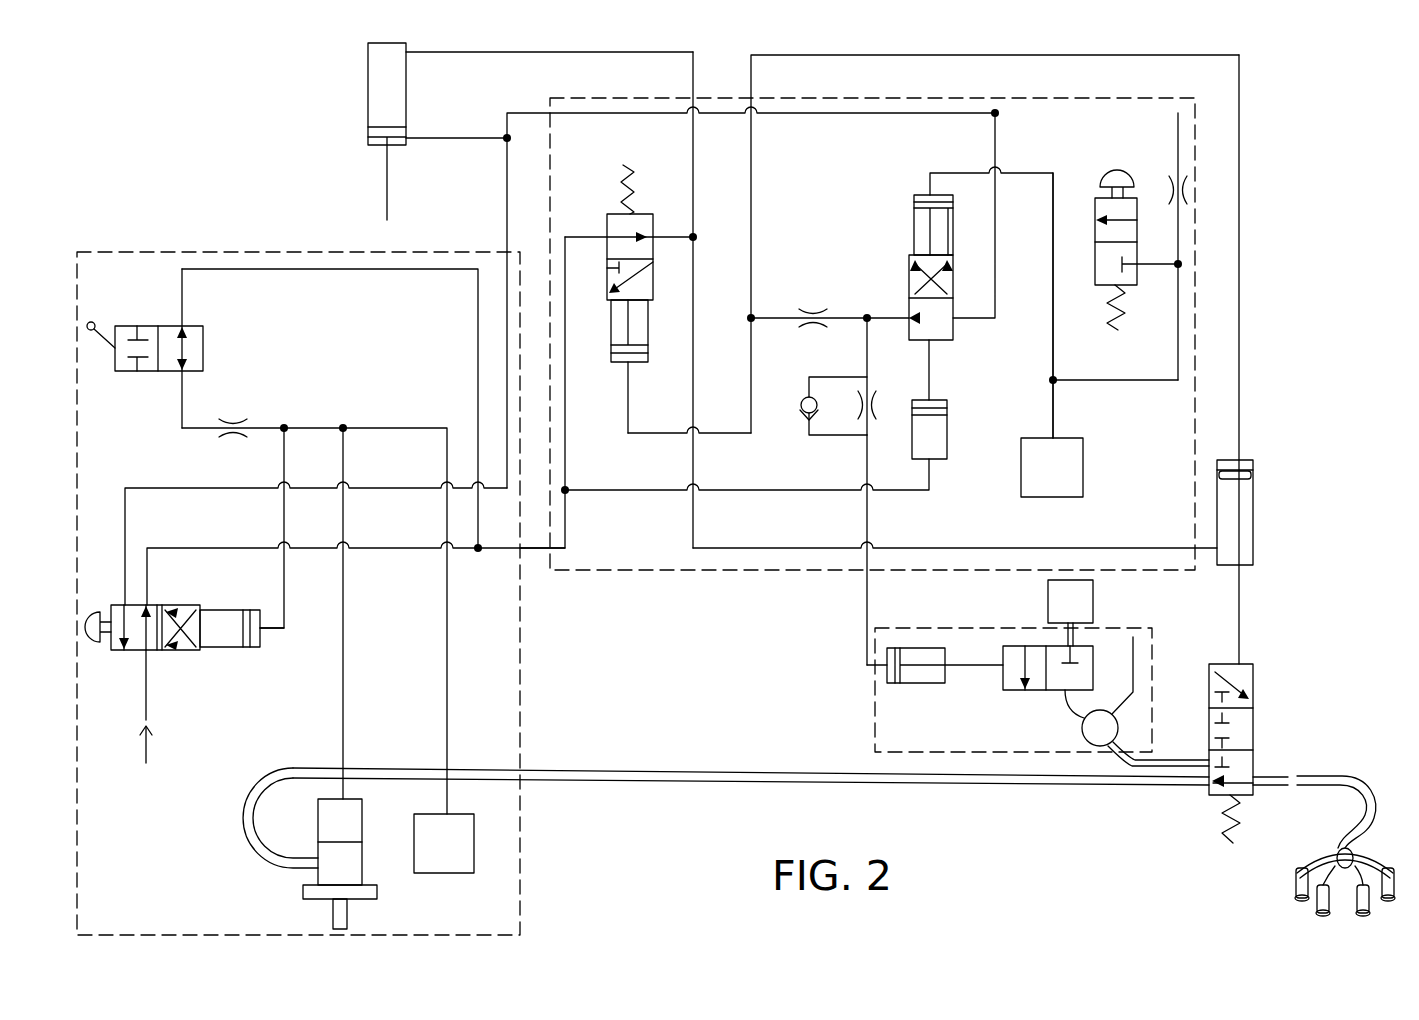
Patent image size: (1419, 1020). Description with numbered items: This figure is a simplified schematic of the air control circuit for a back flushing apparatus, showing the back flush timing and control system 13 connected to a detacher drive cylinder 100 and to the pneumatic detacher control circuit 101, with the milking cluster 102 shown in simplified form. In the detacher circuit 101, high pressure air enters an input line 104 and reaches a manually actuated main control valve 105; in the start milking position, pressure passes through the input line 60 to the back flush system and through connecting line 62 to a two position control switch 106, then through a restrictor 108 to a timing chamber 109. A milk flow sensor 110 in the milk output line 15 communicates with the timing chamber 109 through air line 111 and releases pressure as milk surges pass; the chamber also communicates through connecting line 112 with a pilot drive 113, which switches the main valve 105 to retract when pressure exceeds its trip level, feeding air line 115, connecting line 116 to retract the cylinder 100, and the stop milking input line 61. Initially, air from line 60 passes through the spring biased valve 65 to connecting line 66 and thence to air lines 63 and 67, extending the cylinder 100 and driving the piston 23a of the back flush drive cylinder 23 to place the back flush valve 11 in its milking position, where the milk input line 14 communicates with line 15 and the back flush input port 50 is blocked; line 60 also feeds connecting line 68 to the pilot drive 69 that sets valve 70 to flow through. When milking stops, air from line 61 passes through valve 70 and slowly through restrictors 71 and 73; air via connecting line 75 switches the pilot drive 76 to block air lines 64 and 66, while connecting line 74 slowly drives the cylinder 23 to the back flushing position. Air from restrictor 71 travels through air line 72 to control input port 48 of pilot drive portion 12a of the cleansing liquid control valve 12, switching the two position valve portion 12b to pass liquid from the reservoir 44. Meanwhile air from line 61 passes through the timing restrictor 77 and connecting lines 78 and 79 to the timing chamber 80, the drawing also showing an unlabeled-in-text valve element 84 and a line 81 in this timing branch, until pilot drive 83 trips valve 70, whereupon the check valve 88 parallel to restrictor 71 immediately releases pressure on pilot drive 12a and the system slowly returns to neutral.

The detacher drive cylinder 100 is at (368, 94).
The air line 63 is at (558, 52).
The connecting line 116 is at (466, 138).
The stop milking input line 61 is at (532, 110).
The pneumatic control circuit 101 is at (215, 248).
The two position control switch 106 is at (153, 325).
The connecting line 62 is at (477, 407).
The restrictor 108 is at (240, 425).
The air line 115 is at (183, 485).
The connecting line 112 is at (282, 472).
The air line 111 is at (347, 522).
The input line 60 is at (457, 552).
The main control valve 105 is at (117, 603).
The input line 104 is at (147, 692).
The pilot drive 113 is at (237, 608).
The milk flow sensor 110 is at (362, 808).
The timing chamber 109 is at (447, 873).
The milk output line 15 is at (923, 783).
The back flush timing and control system 13 is at (1199, 254).
The valve 65 is at (607, 221).
The connecting line 66 is at (690, 235).
The pilot drive 76 is at (610, 332).
The air line 64 is at (563, 473).
The connecting line 68 is at (642, 435).
The connecting line 75 is at (752, 397).
The air line 67 is at (694, 395).
The air line 72 is at (868, 541).
The connecting line 74 is at (753, 236).
The restrictor 73 is at (815, 316).
The valve 70 is at (908, 293).
The pilot drive 83 is at (913, 233).
The pilot drive 69 is at (948, 441).
The restrictor 71 is at (867, 409).
The check valve 88 is at (803, 413).
The valve 84 is at (1096, 202).
The timing restrictor 77 is at (1177, 194).
The line 81 is at (1050, 367).
The connecting line 78 is at (1118, 380).
The connecting line 79 is at (1050, 413).
The timing chamber 80 is at (1085, 466).
The back flush drive cylinder 23 is at (1254, 522).
The piston 23a is at (1243, 481).
The reservoir 44 is at (1048, 608).
The cleansing liquid control valve 12 is at (1155, 650).
The control input port 48 is at (863, 663).
The pilot drive portion 12a is at (917, 685).
The two position valve portion 12b is at (1043, 690).
The back flush input port 50 is at (1163, 757).
The back flush valve 11 is at (1256, 729).
The milk input line 14 is at (1263, 780).
The milking cluster 102 is at (1337, 848).